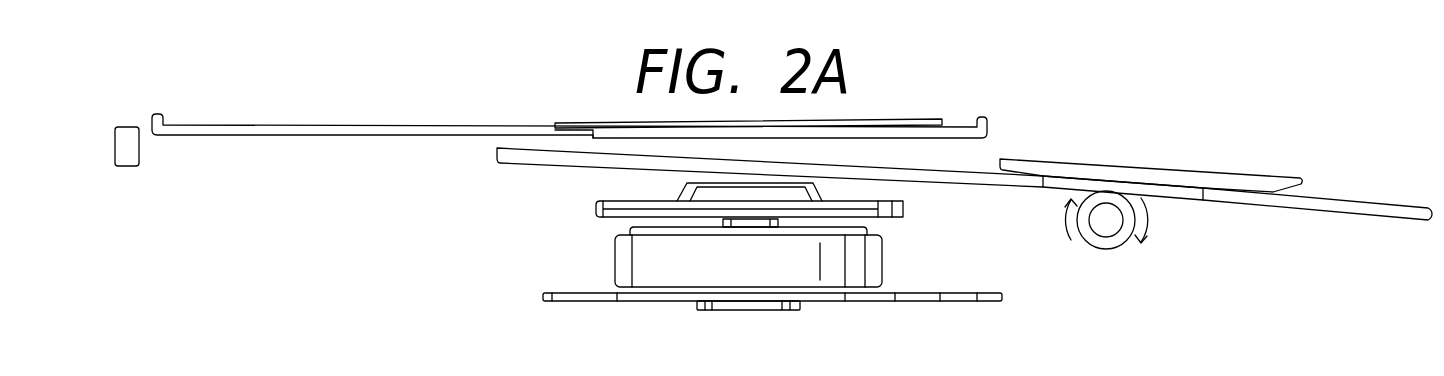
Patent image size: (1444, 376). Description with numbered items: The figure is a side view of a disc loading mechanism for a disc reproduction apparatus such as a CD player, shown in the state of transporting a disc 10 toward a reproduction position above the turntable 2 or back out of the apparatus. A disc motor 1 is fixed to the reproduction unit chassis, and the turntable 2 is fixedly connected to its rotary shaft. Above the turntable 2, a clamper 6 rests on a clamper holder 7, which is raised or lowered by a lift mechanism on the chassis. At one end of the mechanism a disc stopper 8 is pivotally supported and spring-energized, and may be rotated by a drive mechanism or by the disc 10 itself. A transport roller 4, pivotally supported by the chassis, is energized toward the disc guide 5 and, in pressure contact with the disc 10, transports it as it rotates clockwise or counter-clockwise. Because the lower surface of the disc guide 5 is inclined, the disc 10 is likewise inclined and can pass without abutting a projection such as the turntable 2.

The disc motor 1 is at (615, 255).
The turntable 2 is at (596, 206).
The transport roller 4 is at (1100, 250).
The disc guide 5 is at (1207, 171).
The clamper 6 is at (907, 118).
The clamper holder 7 is at (217, 125).
The disc stopper 8 is at (128, 127).
The disc 10 is at (1342, 211).